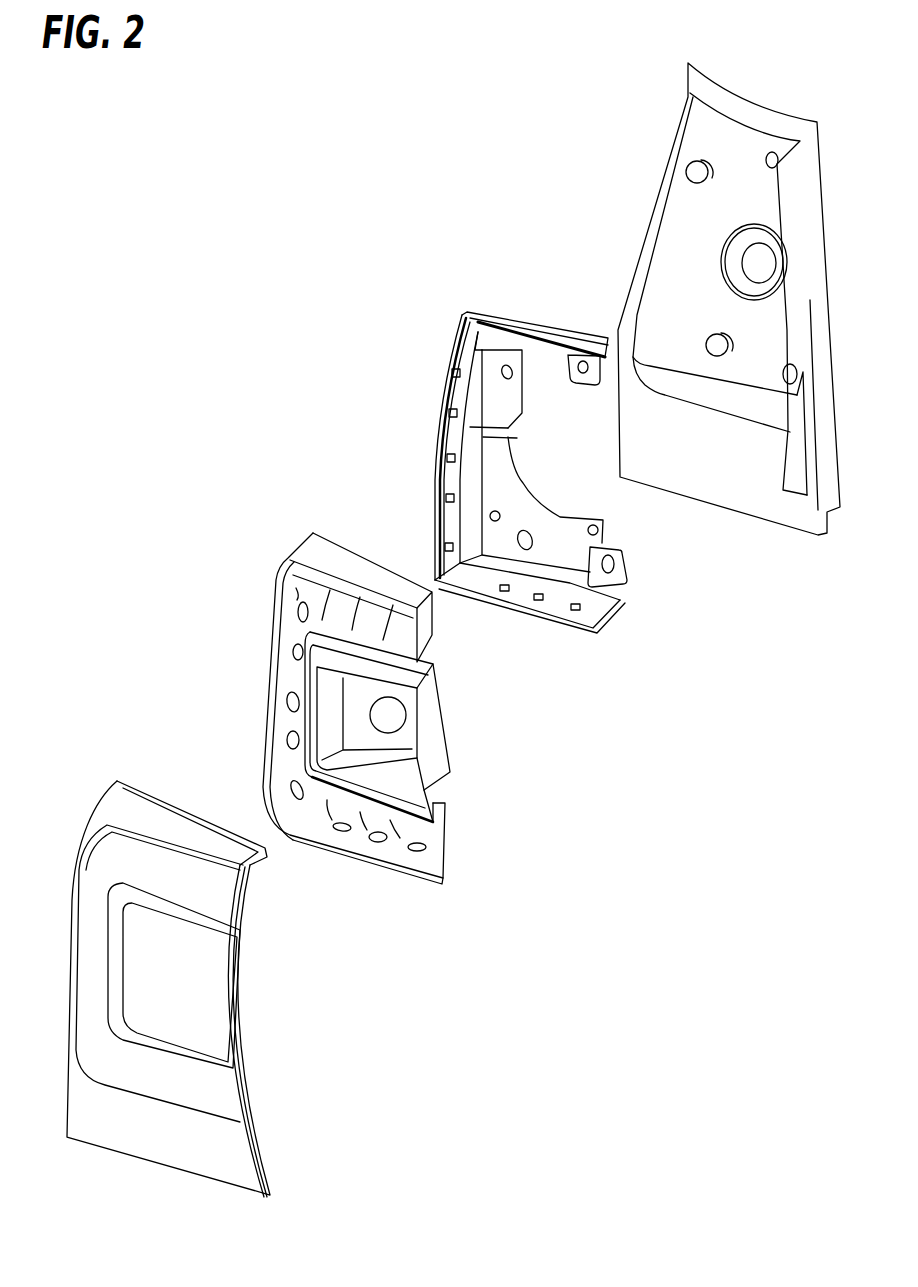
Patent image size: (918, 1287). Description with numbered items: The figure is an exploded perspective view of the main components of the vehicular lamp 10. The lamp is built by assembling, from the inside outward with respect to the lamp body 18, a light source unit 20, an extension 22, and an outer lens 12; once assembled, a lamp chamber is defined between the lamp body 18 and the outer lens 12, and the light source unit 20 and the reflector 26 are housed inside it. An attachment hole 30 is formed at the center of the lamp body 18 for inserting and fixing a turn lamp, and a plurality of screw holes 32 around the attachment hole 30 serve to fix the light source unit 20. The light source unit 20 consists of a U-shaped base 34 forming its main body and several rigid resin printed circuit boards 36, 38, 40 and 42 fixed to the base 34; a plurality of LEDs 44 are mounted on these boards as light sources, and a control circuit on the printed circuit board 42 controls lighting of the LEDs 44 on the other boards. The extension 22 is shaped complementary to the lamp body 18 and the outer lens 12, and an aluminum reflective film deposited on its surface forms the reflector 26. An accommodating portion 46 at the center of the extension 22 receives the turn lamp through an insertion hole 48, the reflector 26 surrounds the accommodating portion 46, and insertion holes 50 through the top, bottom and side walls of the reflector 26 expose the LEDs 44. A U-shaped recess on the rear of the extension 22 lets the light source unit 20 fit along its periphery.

The vehicular lamp 10 is at (290, 368).
The outer lens 12 is at (93, 779).
The lamp body 18 is at (711, 308).
The light source unit 20 is at (517, 451).
The extension 22 is at (350, 698).
The reflector 26 is at (296, 592).
The attachment hole 30 is at (748, 262).
The screw holes 32 is at (772, 158).
The U-shaped base 34 is at (497, 311).
The printed circuit board 36 is at (464, 328).
The printed circuit board 38 is at (628, 587).
The printed circuit board 40 is at (540, 353).
The printed circuit board 42 is at (556, 512).
The LEDs 44 is at (450, 374).
The accommodating portion 46 is at (396, 727).
The insertion hole 48 is at (407, 720).
The insertion holes 50 is at (298, 612).